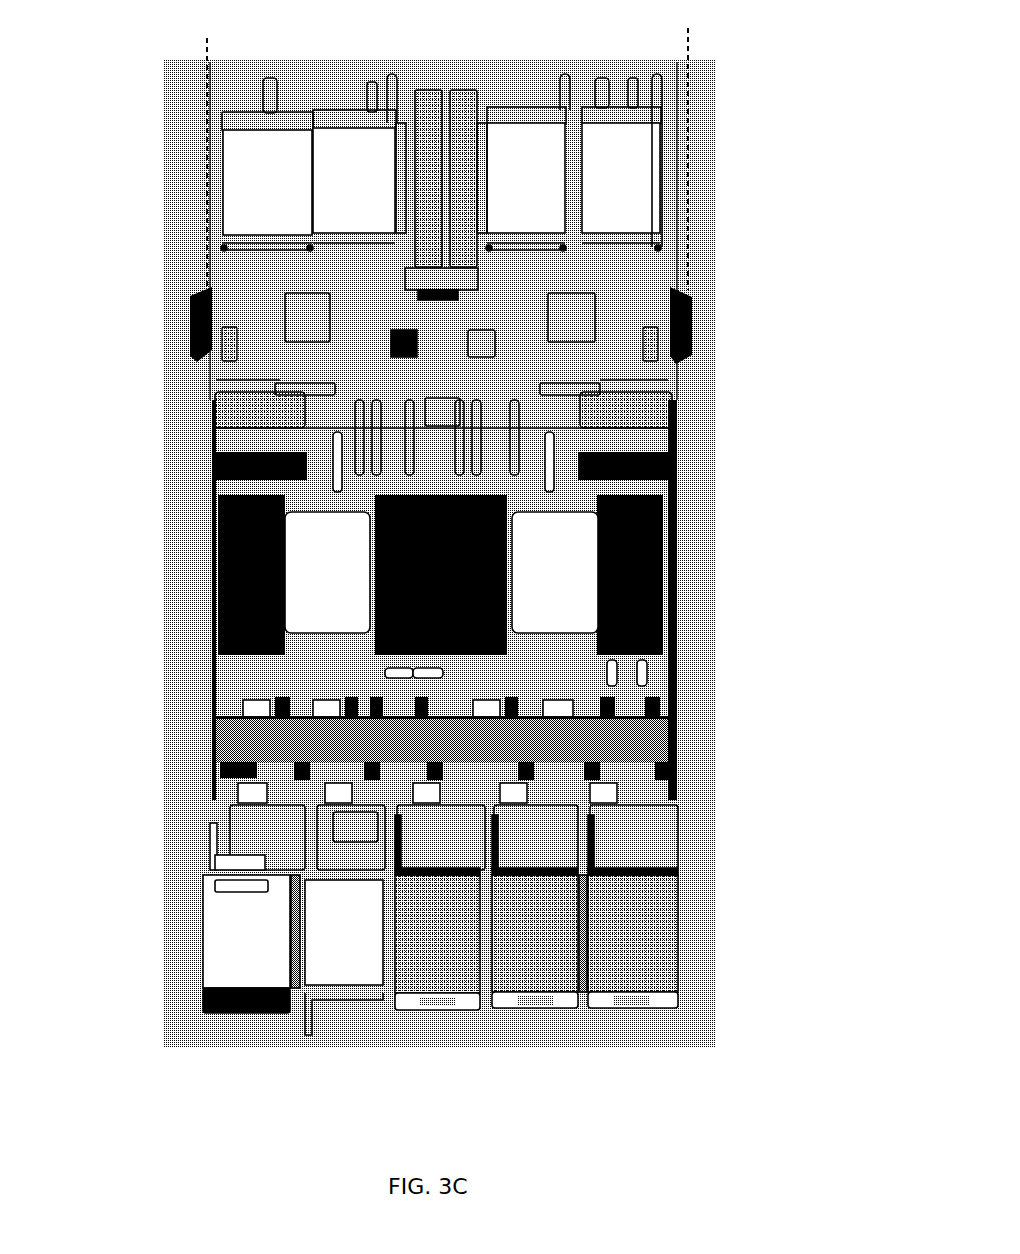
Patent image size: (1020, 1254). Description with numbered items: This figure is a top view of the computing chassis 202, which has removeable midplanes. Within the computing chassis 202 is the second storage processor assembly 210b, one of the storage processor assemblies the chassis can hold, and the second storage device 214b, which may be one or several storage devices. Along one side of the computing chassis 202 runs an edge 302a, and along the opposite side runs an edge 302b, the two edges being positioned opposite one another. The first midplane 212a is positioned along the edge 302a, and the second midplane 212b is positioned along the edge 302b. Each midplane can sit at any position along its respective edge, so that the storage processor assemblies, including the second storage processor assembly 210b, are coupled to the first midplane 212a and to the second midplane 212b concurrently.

The computing chassis 202 is at (800, 144).
The second storage processor assembly 210b is at (148, 580).
The first midplane 212a is at (702, 320).
The second midplane 212b is at (176, 315).
The second storage device 214b is at (158, 948).
The edge 302a is at (691, 148).
The edge 302b is at (214, 158).